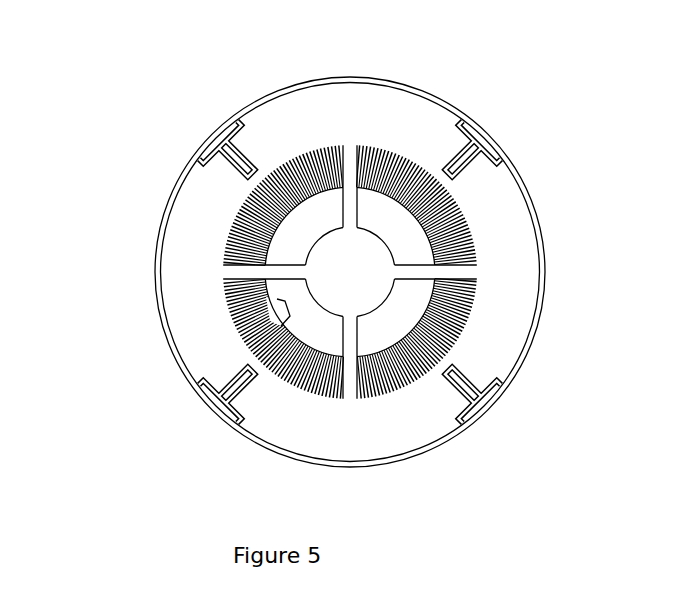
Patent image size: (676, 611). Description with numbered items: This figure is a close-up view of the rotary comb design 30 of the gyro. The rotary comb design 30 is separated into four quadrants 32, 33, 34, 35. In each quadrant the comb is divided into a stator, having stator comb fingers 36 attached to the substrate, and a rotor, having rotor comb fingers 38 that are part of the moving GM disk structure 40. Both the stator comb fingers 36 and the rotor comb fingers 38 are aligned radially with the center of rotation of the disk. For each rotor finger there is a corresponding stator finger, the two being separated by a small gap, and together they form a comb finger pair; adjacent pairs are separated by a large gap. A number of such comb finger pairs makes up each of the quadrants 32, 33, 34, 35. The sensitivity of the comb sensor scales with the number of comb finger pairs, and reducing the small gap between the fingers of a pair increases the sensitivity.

The rotary comb design 30 is at (508, 127).
The quadrant 32 is at (283, 205).
The quadrant 33 is at (417, 205).
The quadrant 34 is at (417, 339).
The quadrant 35 is at (283, 339).
The stator comb fingers 36 is at (277, 299).
The rotor comb fingers 38 is at (233, 211).
The moving GM disk structure 40 is at (357, 272).